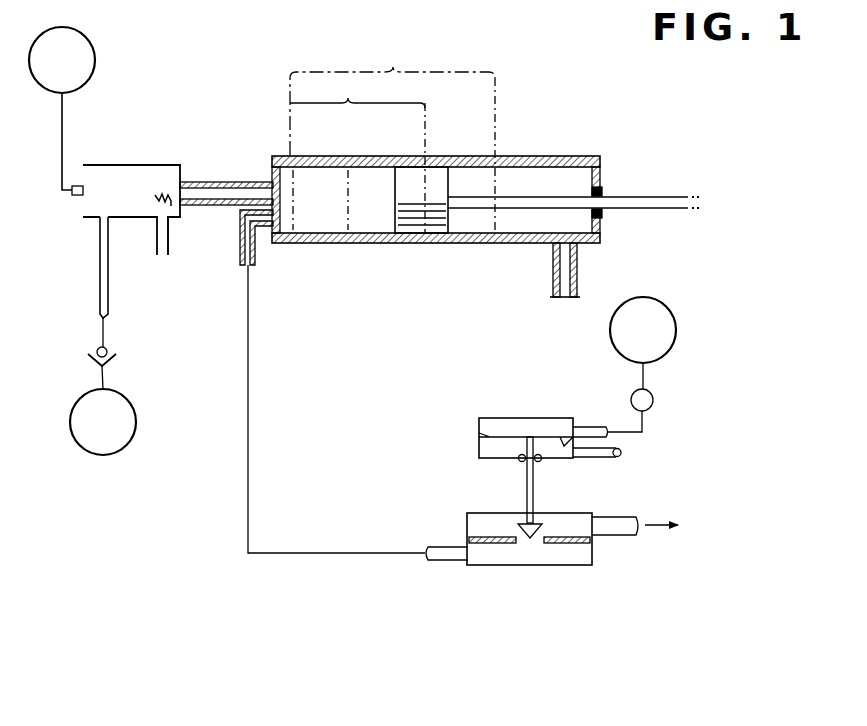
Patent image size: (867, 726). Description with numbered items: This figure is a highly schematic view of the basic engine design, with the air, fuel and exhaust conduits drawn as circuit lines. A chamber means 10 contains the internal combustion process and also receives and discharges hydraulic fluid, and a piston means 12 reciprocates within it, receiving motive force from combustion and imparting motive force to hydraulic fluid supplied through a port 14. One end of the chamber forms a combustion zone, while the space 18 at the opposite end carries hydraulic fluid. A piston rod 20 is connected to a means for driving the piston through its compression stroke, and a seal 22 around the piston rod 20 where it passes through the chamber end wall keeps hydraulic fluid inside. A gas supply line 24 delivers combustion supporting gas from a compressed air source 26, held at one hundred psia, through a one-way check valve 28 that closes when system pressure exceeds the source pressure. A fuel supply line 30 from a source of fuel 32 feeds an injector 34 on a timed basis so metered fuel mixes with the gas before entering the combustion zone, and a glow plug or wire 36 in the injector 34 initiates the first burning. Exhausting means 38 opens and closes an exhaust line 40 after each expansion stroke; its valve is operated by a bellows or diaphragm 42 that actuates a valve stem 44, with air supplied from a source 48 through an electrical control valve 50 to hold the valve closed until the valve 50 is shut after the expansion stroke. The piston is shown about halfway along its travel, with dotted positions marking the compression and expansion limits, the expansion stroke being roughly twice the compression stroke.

The chamber means 10 is at (552, 157).
The piston means 12 is at (413, 240).
The port 14 is at (566, 236).
The space 18 is at (578, 187).
The piston rod 20 is at (662, 197).
The seal 22 is at (602, 216).
The gas supply line 24 is at (110, 296).
The source of compressed air 26 is at (137, 425).
The one-way check valve 28 is at (110, 348).
The fuel supply line 30 is at (66, 138).
The source of fuel 32 is at (93, 44).
The injector 34 is at (130, 163).
The glow plug or wire 36 is at (156, 198).
The exhausting means 38 is at (488, 482).
The exhaust line 40 is at (253, 258).
The bellows or diaphragm 42 is at (511, 437).
The valve stem 44 is at (538, 486).
The source of air 48 is at (672, 352).
The electrical control valve 50 is at (653, 398).